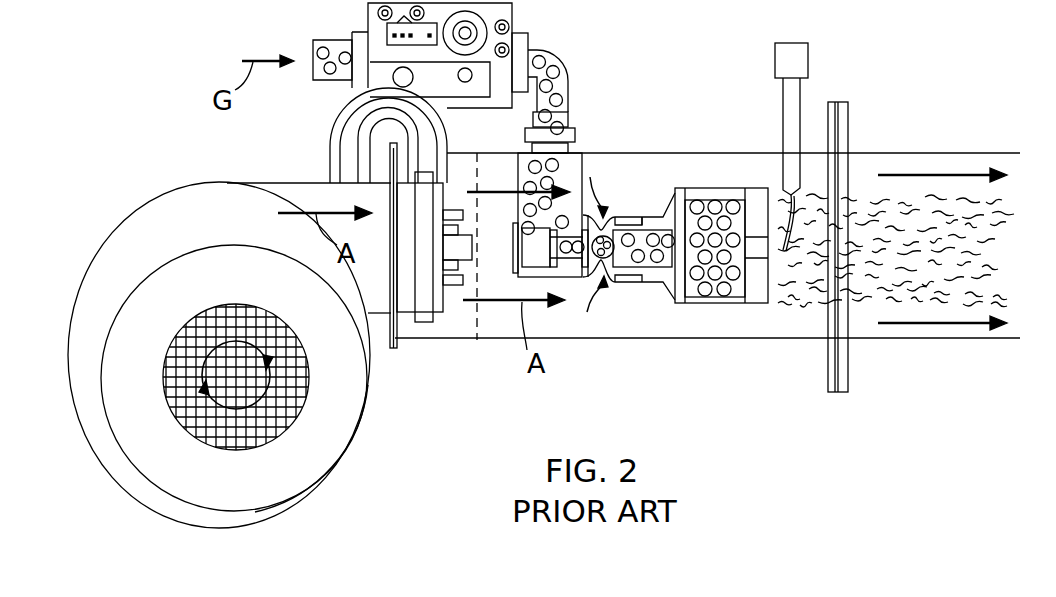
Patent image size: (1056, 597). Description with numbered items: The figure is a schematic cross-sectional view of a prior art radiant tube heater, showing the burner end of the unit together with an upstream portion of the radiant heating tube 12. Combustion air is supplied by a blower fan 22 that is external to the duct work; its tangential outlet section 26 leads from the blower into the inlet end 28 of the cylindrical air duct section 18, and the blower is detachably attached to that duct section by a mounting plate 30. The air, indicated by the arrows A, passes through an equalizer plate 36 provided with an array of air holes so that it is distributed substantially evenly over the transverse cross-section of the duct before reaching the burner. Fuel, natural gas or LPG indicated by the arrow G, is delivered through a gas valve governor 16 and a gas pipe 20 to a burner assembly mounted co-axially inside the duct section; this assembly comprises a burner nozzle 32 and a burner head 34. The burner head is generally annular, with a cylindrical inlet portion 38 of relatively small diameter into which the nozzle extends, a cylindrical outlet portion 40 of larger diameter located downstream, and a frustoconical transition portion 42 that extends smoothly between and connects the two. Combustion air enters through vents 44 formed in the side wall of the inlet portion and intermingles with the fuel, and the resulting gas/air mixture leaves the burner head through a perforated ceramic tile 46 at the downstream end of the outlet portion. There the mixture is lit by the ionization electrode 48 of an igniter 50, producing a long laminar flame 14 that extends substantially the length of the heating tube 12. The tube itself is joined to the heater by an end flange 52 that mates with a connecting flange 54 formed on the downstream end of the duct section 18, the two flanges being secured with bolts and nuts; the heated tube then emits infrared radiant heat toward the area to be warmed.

The heating tube 12 is at (920, 155).
The flame 14 is at (965, 255).
The gas valve governor 16 is at (382, 63).
The air duct section 18 is at (715, 153).
The gas pipe 20 is at (555, 58).
The blower fan 22 is at (168, 227).
The air inlet duct 26 is at (343, 203).
The inlet end 28 is at (392, 318).
The mounting plate 30 is at (392, 330).
The burner nozzle 32 is at (572, 275).
The burner head 34 is at (680, 285).
The equalizer plate 36 is at (480, 317).
The inlet portion 38 is at (628, 268).
The outlet portion 40 is at (722, 305).
The transition portion 42 is at (672, 200).
The vents 44 is at (605, 218).
The perforated ceramic tile 46 is at (755, 287).
The ionization electrode 48 is at (787, 222).
The igniter 50 is at (802, 102).
The end flange 52 is at (848, 360).
The connecting flange 54 is at (837, 130).